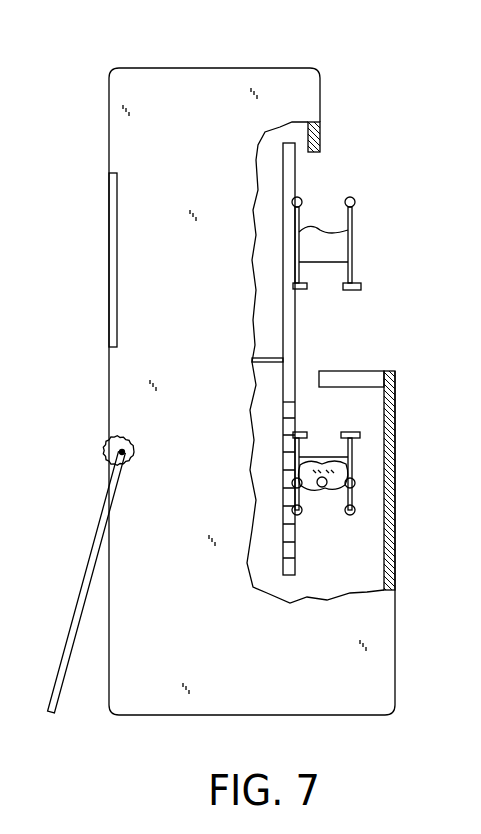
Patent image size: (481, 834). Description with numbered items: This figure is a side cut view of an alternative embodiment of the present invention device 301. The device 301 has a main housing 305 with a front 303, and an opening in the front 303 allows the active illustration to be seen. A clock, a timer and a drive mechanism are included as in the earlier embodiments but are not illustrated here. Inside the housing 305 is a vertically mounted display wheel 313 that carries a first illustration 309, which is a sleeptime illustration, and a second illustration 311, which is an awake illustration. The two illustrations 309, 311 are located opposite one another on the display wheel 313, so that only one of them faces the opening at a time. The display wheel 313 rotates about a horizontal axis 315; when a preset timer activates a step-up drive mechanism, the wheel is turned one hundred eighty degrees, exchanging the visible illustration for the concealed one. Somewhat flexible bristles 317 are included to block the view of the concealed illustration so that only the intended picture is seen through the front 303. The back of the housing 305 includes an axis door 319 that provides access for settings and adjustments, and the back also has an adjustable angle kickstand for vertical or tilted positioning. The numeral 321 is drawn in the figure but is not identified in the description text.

The present invention device 301 is at (93, 91).
The front 303 is at (397, 478).
The main housing 305 is at (194, 78).
The first illustration 309 is at (330, 223).
The second illustration 311 is at (337, 488).
The display wheel 313 is at (295, 323).
The horizontal axis 315 is at (252, 357).
The flexible bristles 317 is at (333, 386).
The axis door 319 is at (110, 228).
The gear wheel 321 is at (110, 457).